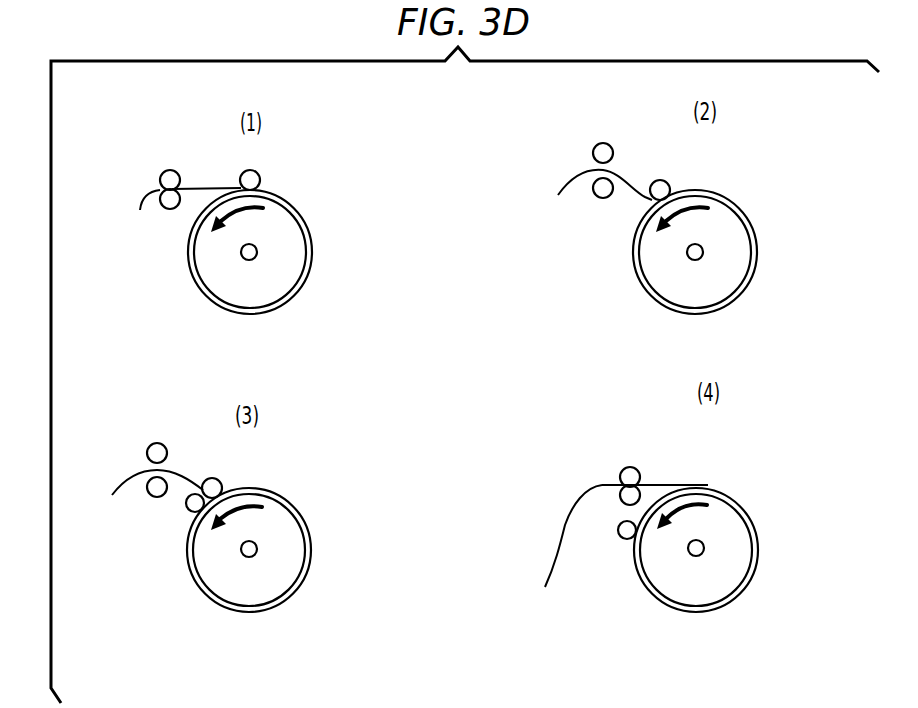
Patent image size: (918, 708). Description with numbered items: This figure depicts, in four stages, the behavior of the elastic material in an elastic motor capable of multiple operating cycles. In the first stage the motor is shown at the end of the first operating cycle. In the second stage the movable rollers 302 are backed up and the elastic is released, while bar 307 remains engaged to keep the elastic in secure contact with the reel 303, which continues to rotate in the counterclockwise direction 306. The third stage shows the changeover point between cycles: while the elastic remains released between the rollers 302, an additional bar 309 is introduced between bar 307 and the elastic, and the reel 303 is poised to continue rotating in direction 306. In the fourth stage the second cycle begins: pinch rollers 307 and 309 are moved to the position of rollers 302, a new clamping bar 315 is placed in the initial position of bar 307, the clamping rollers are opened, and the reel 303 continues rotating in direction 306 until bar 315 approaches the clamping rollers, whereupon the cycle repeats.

The movable rollers 302 is at (168, 170).
The reel 303 is at (303, 279).
The counterclockwise direction 306 is at (580, 178).
The bar 307 is at (250, 180).
The additional bar 309 is at (188, 510).
The new clamping bar 315 is at (623, 538).